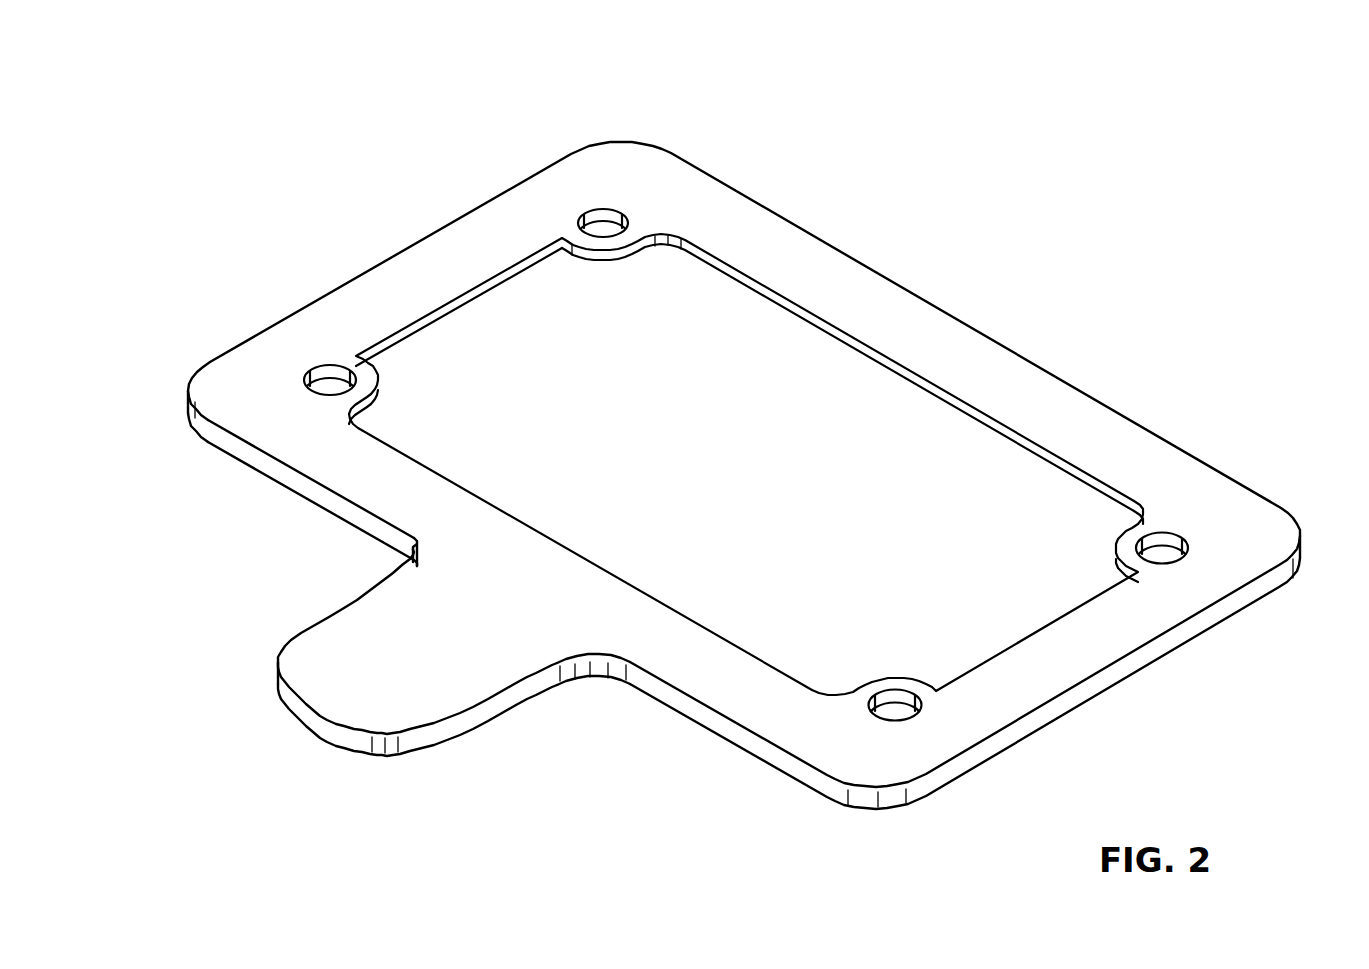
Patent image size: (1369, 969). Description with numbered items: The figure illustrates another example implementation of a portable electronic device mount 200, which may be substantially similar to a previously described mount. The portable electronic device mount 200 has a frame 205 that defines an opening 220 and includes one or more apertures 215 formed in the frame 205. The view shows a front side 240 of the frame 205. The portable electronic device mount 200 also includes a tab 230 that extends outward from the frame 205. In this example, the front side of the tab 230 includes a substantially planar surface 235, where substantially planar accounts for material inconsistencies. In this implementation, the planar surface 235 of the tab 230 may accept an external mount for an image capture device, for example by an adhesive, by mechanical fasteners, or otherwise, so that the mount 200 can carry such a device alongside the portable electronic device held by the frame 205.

The portable electronic device mount 200 is at (744, 447).
The frame 205 is at (869, 274).
The apertures 215 is at (606, 230).
The opening 220 is at (950, 461).
The tab 230 is at (418, 748).
The planar surface 235 is at (410, 689).
The front side 240 is at (686, 657).